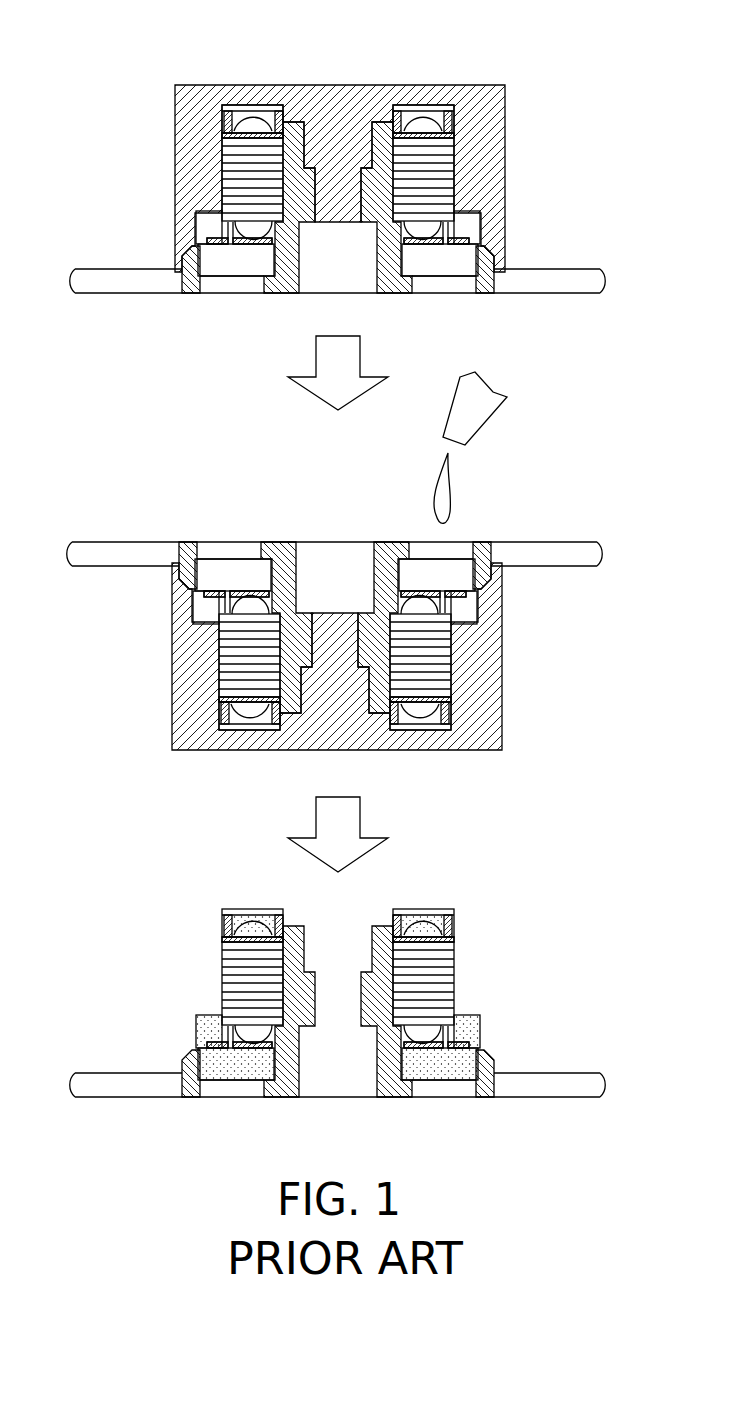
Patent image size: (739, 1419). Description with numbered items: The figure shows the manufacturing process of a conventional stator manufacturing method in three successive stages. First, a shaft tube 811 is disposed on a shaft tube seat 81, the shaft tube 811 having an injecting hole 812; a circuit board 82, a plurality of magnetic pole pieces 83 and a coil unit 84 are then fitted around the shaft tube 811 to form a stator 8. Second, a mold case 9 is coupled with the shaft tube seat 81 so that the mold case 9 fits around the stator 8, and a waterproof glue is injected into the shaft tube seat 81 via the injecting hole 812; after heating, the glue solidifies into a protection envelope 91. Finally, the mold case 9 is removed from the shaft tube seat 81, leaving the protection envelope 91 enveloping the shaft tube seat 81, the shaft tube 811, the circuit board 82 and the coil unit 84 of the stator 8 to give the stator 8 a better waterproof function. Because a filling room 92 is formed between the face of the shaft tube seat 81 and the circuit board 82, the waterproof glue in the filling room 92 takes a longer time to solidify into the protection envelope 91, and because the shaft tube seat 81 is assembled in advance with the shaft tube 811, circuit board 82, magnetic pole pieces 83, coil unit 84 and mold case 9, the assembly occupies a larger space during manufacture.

The stator 8 is at (336, 604).
The shaft tube seat 81 is at (460, 292).
The shaft tube 811 is at (380, 252).
The injecting hole 812 is at (215, 290).
The circuit board 82 is at (458, 232).
The magnetic pole pieces 83 is at (457, 157).
The coil unit 84 is at (420, 128).
The mold case 9 is at (192, 92).
The protection envelope 91 is at (440, 908).
The filling room 92 is at (466, 262).